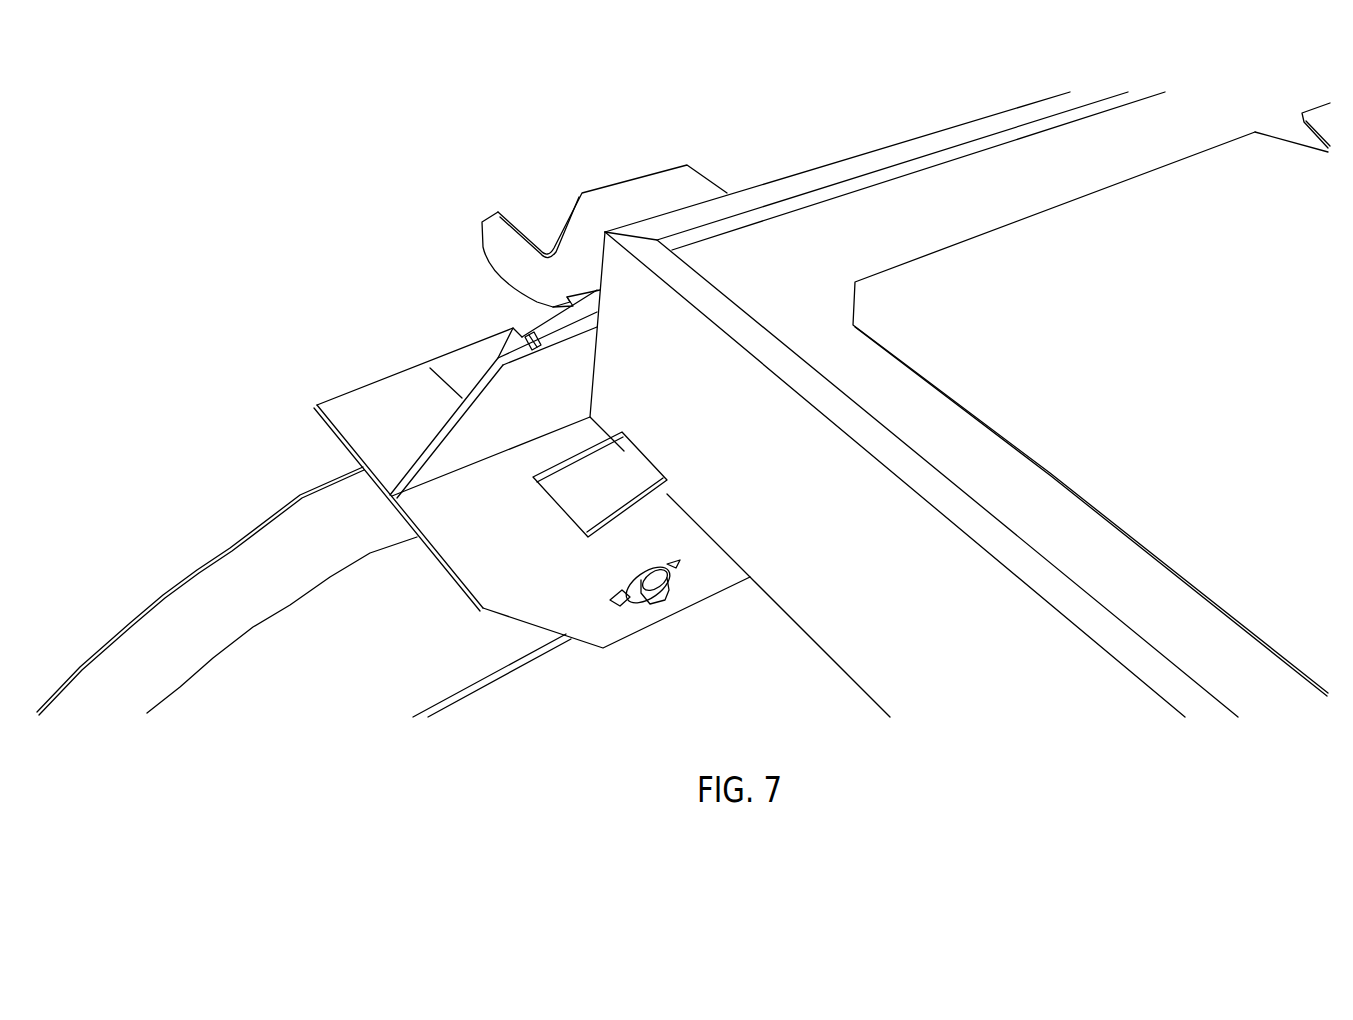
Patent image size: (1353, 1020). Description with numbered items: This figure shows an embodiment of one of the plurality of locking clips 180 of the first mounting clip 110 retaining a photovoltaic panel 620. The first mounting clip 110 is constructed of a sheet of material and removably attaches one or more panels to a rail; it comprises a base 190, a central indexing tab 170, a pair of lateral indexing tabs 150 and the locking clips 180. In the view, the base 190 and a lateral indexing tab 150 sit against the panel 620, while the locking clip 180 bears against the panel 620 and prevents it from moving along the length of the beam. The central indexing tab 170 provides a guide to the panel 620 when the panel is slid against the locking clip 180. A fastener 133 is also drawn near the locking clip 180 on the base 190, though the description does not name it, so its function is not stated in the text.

The first mounting clip 110 is at (360, 408).
The fastener 133 is at (655, 607).
The lateral indexing tab 150 is at (682, 177).
The central indexing tab 170 is at (503, 372).
The locking clip 180 is at (603, 491).
The base 190 is at (463, 530).
The photovoltaic panel 620 is at (946, 178).